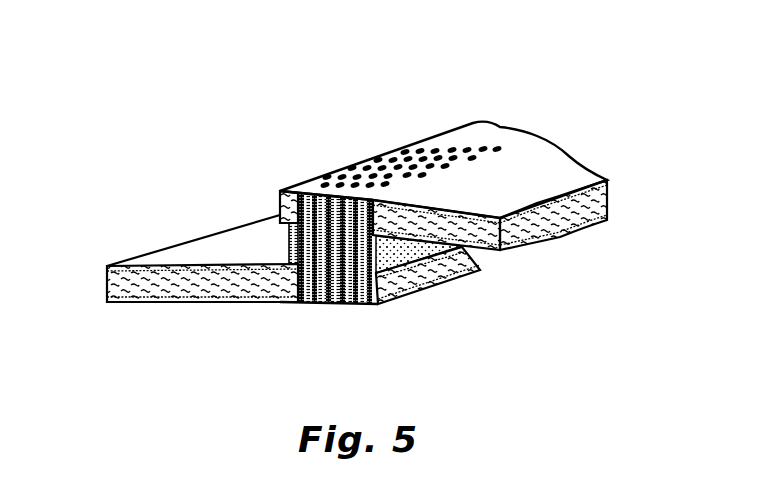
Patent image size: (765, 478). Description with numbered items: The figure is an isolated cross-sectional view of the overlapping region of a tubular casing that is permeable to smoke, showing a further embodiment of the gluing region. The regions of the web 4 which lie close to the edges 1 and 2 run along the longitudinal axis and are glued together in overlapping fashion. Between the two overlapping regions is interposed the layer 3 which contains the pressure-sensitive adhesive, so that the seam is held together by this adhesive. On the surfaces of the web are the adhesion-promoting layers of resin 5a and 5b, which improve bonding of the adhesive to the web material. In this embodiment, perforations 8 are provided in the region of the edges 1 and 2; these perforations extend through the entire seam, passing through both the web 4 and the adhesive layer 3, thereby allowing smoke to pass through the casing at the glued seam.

The edge 1 is at (278, 217).
The edge 2 is at (428, 279).
The layer containing pressure-sensitive adhesive 3 is at (293, 250).
The web 4 is at (113, 291).
The adhesion-promoting layer of resin 5a is at (178, 264).
The adhesion-promoting layer of resin 5b is at (185, 303).
The perforations 8 is at (383, 150).